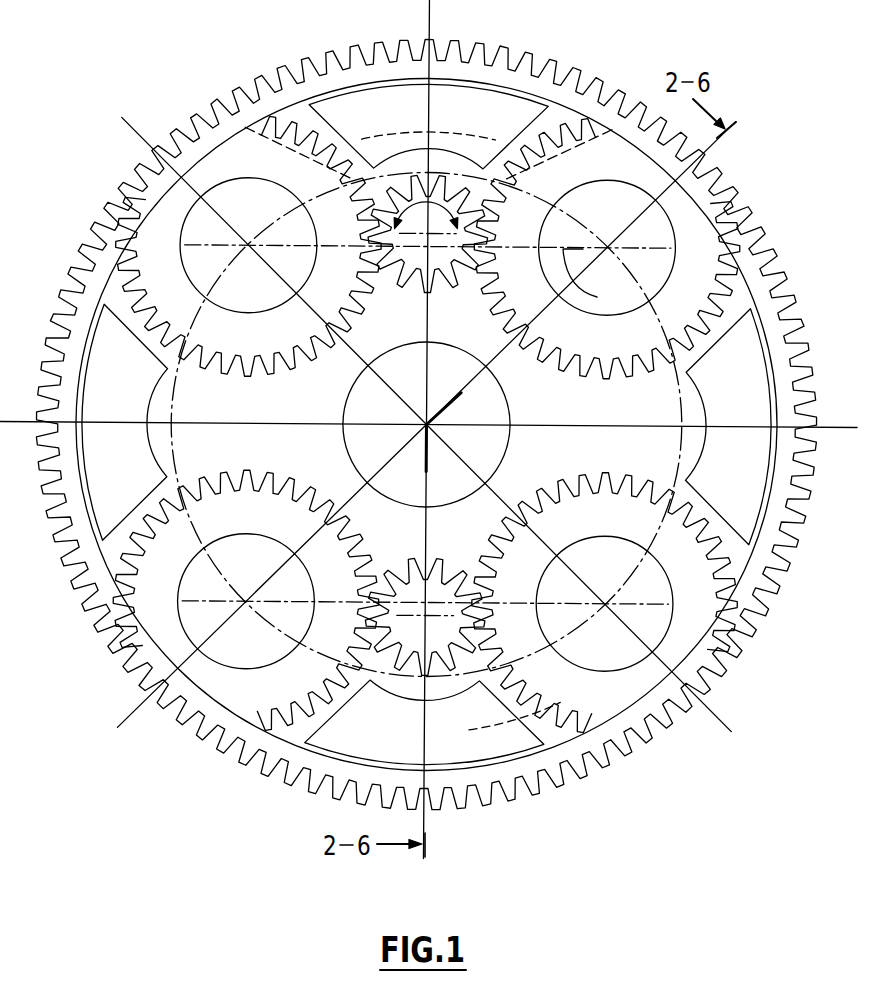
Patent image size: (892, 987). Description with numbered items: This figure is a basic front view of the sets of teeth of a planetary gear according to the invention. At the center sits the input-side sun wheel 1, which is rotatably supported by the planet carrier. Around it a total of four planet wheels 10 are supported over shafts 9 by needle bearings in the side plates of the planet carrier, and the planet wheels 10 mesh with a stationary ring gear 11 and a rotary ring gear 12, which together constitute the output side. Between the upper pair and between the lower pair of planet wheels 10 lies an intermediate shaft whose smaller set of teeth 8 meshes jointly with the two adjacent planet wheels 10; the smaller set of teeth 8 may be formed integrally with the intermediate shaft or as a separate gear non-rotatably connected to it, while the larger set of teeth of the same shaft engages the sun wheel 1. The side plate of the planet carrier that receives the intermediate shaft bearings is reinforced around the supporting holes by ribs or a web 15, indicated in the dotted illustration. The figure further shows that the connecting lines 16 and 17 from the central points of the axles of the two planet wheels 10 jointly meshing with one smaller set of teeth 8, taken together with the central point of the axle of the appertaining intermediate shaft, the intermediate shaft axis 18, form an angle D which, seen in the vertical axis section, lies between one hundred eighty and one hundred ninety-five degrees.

The sun wheel 1 is at (413, 457).
The smaller set of teeth 8 is at (468, 262).
The shafts 9 is at (187, 221).
The planet wheels 10 is at (263, 508).
The stationary ring gear 11 is at (330, 46).
The rotary ring gear 12 is at (427, 424).
The web 15 is at (461, 133).
The connecting line 16 is at (346, 241).
The connecting line 17 is at (595, 279).
The intermediate shaft axis 18 is at (418, 275).
The angle D is at (362, 212).